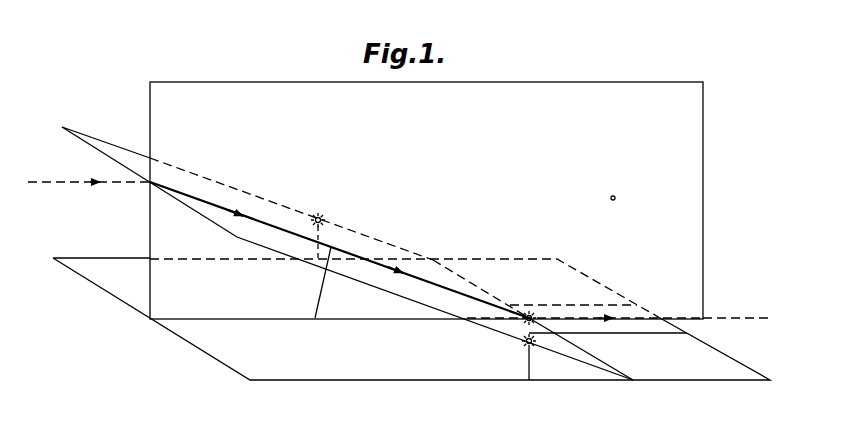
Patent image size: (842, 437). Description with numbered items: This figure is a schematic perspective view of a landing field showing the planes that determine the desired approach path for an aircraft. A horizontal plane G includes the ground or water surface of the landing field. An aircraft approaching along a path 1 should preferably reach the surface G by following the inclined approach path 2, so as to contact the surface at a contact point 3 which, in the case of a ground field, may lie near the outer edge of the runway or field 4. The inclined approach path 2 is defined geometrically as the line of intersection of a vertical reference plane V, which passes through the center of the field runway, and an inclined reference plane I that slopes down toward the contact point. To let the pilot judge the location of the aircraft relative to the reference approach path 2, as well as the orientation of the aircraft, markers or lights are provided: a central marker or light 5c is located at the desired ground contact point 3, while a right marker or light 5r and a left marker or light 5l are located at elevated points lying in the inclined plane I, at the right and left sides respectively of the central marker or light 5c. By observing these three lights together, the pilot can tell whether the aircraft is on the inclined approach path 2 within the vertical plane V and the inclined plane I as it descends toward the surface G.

The vertical reference plane V is at (150, 103).
The horizontal plane G is at (443, 381).
The inclined reference plane I is at (112, 158).
The path 1 is at (99, 184).
The inclined approach path 2 is at (298, 235).
The ground contact point 3 is at (529, 318).
The runway 4 is at (626, 334).
The left marker or light 5l is at (324, 215).
The central marker or light 5c is at (531, 312).
The right marker or light 5r is at (523, 345).